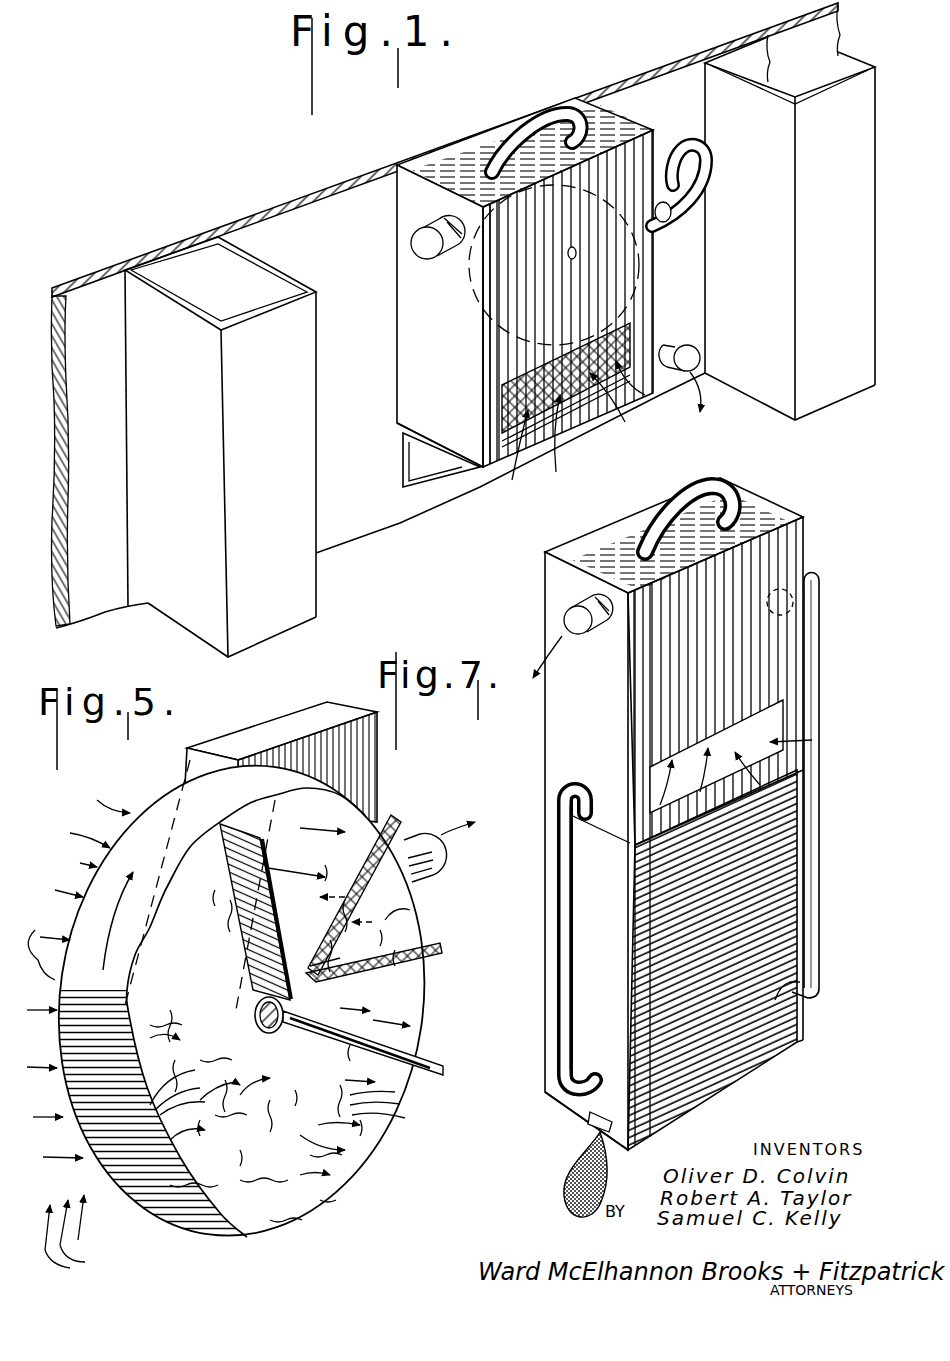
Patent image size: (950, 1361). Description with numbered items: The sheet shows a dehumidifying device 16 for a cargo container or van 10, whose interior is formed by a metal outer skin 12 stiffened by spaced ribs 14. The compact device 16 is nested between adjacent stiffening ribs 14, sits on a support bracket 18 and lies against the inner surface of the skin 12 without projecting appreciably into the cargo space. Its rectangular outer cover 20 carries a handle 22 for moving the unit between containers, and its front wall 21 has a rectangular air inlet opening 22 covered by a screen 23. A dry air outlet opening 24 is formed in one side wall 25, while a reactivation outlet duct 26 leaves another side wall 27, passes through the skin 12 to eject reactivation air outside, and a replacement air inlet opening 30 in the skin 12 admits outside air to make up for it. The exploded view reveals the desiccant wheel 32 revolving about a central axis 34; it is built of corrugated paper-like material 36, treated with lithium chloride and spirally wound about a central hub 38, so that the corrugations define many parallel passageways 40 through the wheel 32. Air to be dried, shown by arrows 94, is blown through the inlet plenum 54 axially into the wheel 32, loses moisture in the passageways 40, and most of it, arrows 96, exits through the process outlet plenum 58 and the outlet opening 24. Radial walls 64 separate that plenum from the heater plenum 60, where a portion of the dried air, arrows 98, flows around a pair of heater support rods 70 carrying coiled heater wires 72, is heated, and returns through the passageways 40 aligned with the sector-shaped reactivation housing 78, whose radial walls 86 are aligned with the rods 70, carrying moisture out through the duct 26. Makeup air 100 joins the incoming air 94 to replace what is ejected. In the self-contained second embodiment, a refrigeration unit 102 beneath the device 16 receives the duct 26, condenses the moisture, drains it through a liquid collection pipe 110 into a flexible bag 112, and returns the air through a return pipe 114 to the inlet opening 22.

In FIG. 1, the container or van 10 is at (334, 166).
In FIG. 1, the outer skin 12 is at (262, 212).
In FIG. 1, the stiffening ribs 14 is at (152, 390).
In FIG. 1, the dehumidifying device 16 is at (524, 262).
In FIG. 7, the dehumidifying device 16 is at (689, 796).
In FIG. 1, the support bracket 18 is at (403, 455).
In FIG. 1, the outer cover 20 is at (606, 108).
In FIG. 7, the outer cover 20 is at (797, 548).
In FIG. 1, the front wall 21 is at (490, 355).
In FIG. 1, the handle / air inlet opening 22 is at (531, 116).
In FIG. 7, the handle / air inlet opening 22 is at (716, 738).
In FIG. 1, the screen 23 is at (552, 430).
In FIG. 1, the dry air outlet opening 24 is at (418, 228).
In FIG. 7, the dry air outlet opening 24 is at (568, 606).
In FIG. 1, the side wall 25 is at (405, 305).
In FIG. 1, the reactivation outlet duct 26 is at (686, 214).
In FIG. 7, the reactivation outlet duct 26 is at (810, 882).
In FIG. 5, the reactivation outlet duct 26 is at (440, 864).
In FIG. 1, the side wall 27 is at (640, 270).
In FIG. 1, the replacement air inlet opening 30 is at (682, 343).
In FIG. 5, the desiccant wheel 32 is at (165, 790).
In FIG. 5, the central axis 34 is at (276, 1032).
In FIG. 5, the corrugated paper-like material 36 is at (262, 1200).
In FIG. 5, the central hub 38 is at (256, 1020).
In FIG. 5, the parallel passageways 40 is at (400, 1118).
In FIG. 5, the inlet plenum 54 is at (95, 865).
In FIG. 5, the process outlet plenum 58 is at (408, 1090).
In FIG. 5, the heater plenum 60 is at (422, 992).
In FIG. 5, the radially extending walls 64 is at (258, 924).
In FIG. 5, the heater support rods 70 is at (398, 814).
In FIG. 5, the electrical heater wires 72 is at (435, 956).
In FIG. 5, the reactivation housing 78 is at (296, 715).
In FIG. 5, the radially extending walls 86 is at (197, 762).
In FIG. 5, the air to be dehumidified 94 is at (90, 808).
In FIG. 5, the dried air 96 is at (314, 1140).
In FIG. 5, the reactivation air 98 is at (398, 1018).
In FIG. 5, the makeup air 100 is at (92, 1245).
In FIG. 7, the refrigeration unit 102 is at (790, 1063).
In FIG. 7, the liquid collection pipe 110 is at (590, 1118).
In FIG. 7, the flexible bag 112 is at (574, 1160).
In FIG. 7, the return pipe 114 is at (558, 835).